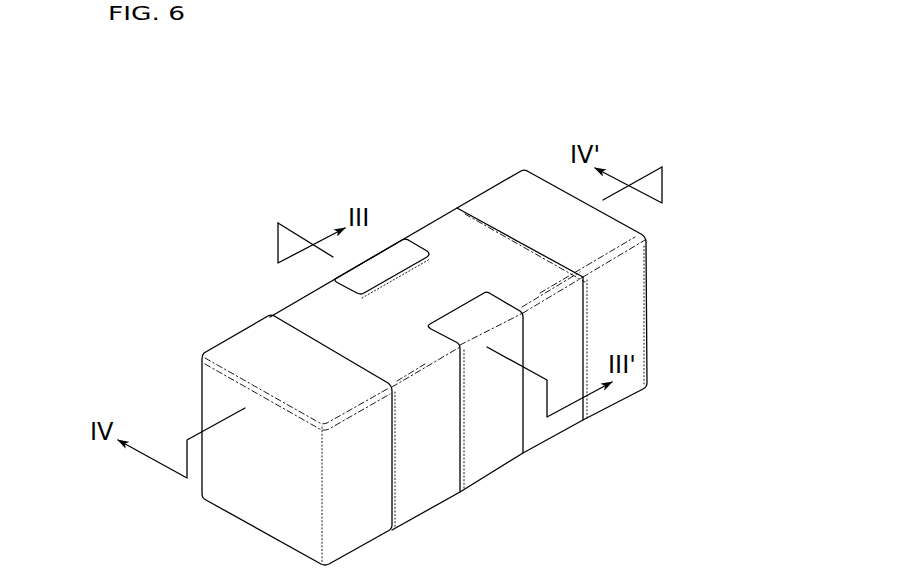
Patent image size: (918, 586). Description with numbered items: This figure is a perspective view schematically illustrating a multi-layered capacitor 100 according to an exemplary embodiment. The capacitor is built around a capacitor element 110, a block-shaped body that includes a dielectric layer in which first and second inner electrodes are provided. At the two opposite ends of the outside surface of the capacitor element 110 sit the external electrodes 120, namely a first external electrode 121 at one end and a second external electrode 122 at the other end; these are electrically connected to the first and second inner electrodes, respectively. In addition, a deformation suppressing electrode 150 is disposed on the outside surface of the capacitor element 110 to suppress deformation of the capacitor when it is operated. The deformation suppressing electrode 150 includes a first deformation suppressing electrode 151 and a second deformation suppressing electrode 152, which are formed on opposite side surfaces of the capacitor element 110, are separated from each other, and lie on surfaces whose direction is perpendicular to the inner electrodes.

The multi-layered capacitor 100 is at (133, 83).
The capacitor element 110 is at (570, 342).
The external electrodes 120 is at (437, 367).
The first external electrode 121 is at (373, 528).
The second external electrode 122 is at (559, 324).
The deformation suppressing electrode 150 is at (429, 297).
The first deformation suppressing electrode 151 is at (388, 258).
The second deformation suppressing electrode 152 is at (488, 305).